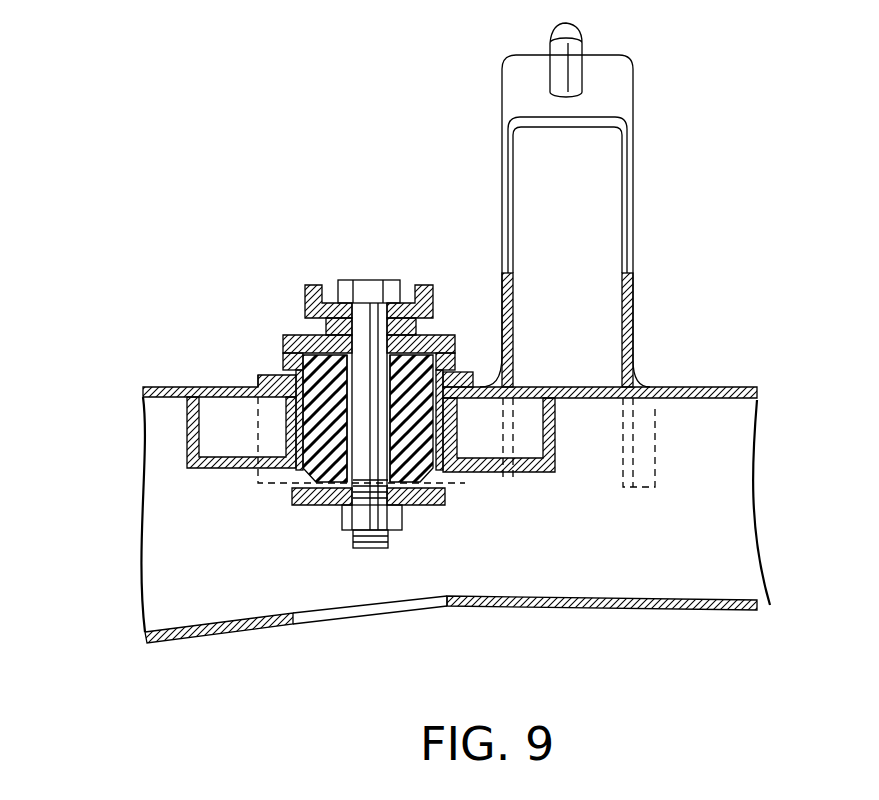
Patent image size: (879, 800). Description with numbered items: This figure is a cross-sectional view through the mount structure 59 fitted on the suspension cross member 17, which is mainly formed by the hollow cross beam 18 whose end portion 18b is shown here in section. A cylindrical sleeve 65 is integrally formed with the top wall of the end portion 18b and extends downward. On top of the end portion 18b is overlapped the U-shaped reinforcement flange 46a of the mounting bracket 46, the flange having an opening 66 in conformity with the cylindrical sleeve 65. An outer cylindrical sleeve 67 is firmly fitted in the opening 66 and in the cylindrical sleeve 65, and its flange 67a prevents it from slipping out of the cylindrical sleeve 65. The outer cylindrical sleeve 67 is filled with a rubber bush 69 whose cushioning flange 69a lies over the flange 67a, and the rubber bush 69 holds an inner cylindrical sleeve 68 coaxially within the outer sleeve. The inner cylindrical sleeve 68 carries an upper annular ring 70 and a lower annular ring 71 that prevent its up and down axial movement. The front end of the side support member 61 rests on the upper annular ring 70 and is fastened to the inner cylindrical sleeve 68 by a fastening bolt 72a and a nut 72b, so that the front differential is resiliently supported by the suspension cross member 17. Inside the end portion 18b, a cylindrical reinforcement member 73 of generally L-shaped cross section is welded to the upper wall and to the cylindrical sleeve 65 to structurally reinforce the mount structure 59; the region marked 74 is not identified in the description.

The suspension cross member 17 is at (754, 339).
The cross beam 18 is at (733, 615).
The end portion 18b is at (185, 385).
The mounting bracket 46 is at (633, 180).
The U-shaped reinforcement flange 46a is at (500, 372).
The mount structure 59 is at (515, 568).
The side support member 61 is at (422, 290).
The cylindrical sleeve 65 is at (285, 422).
The opening 66 is at (413, 348).
The outer cylindrical sleeve 67 is at (316, 482).
The flange 67a is at (328, 335).
The inner cylindrical sleeve 68 is at (420, 505).
The rubber bush 69 is at (420, 455).
The cushioning flange 69a is at (287, 355).
The upper annular ring 70 is at (336, 298).
The lower annular ring 71 is at (340, 508).
The fastening bolt 72a is at (373, 280).
The nut 72b is at (383, 552).
The cylindrical reinforcement member 73 is at (555, 442).
The side panel 74 is at (155, 490).